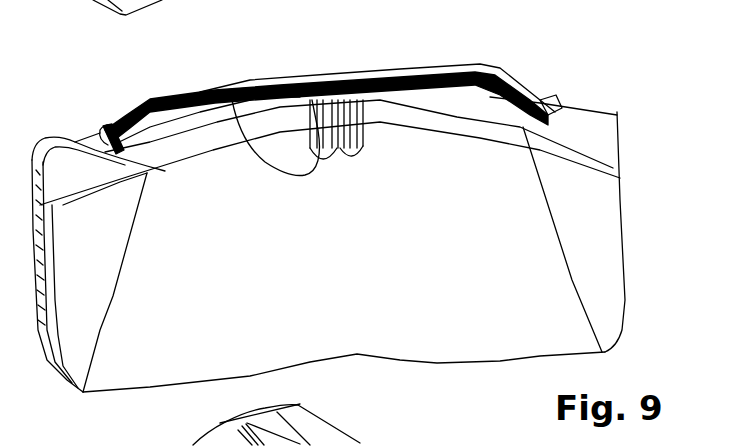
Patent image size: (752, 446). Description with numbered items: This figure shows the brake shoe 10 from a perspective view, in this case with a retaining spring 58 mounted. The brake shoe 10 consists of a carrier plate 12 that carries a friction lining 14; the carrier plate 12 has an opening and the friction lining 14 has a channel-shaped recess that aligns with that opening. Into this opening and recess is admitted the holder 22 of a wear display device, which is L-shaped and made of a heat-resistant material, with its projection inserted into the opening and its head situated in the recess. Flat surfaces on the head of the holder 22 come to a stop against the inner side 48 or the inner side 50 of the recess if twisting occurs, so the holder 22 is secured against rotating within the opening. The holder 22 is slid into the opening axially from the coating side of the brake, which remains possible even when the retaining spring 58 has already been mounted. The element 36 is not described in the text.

The brake shoe 10 is at (672, 82).
The carrier plate 12 is at (592, 127).
The friction lining 14 is at (593, 212).
The holder 22 is at (333, 100).
The mounting bracket 36 is at (388, 445).
The inner side of recess 48 is at (347, 100).
The inner side of recess 50 is at (232, 100).
The retaining spring 58 is at (278, 84).